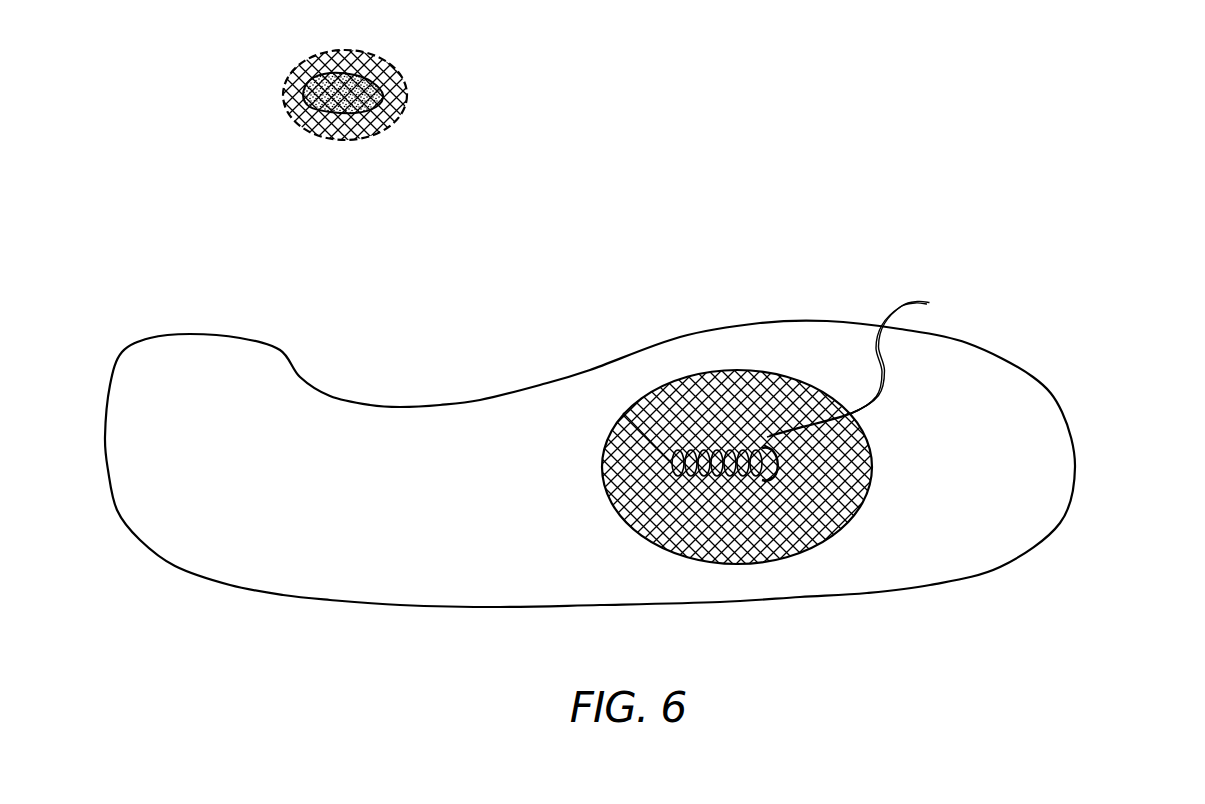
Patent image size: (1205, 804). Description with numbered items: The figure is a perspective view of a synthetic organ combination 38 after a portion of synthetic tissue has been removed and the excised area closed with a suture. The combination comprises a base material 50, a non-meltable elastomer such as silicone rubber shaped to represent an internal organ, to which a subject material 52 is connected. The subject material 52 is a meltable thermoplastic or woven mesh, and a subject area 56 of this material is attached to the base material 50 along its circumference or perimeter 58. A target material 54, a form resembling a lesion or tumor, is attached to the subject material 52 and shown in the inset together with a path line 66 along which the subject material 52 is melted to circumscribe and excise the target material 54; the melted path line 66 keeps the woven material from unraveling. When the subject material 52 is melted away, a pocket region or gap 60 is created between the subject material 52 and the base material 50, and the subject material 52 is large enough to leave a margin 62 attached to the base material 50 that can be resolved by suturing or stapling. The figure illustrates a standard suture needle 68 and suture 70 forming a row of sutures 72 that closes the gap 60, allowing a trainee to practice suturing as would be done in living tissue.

The pillow device 38 is at (624, 450).
The base material 50 is at (300, 597).
The subject material 52 is at (850, 413).
The target material 54 is at (322, 112).
The subject area 56 is at (837, 502).
The perimeter 58 is at (657, 547).
The gap 60 is at (773, 463).
The margin 62 is at (777, 481).
The path line 66 is at (407, 110).
The suture needle 68 is at (773, 437).
The suture 70 is at (623, 413).
The row of sutures 72 is at (672, 463).